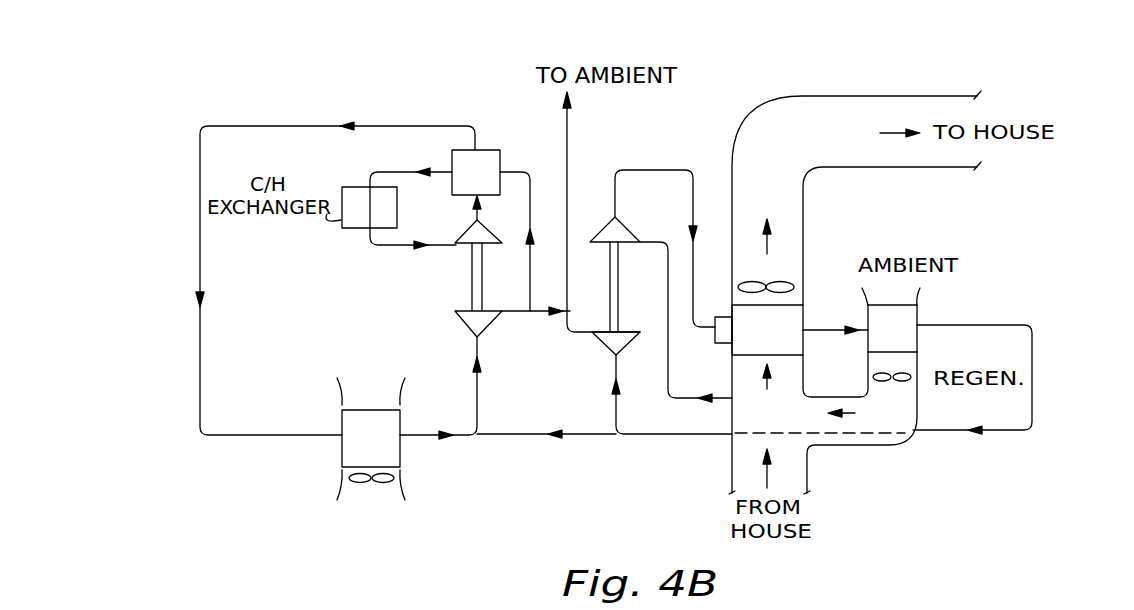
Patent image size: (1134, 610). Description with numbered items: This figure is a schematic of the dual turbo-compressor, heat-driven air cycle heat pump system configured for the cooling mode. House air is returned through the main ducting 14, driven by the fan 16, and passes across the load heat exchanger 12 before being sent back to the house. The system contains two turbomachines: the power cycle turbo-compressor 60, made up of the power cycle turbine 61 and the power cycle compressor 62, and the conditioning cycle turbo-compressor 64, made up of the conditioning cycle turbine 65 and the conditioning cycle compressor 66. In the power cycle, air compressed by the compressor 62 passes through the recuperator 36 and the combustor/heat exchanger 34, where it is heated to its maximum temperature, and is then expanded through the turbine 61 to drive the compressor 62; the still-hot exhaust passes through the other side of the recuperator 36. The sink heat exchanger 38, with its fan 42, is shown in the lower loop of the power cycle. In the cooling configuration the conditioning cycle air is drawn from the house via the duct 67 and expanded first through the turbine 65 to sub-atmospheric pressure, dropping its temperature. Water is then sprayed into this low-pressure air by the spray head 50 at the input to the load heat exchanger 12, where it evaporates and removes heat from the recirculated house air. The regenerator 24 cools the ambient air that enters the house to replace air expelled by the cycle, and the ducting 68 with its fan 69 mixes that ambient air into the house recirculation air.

The load heat exchanger 12 is at (803, 317).
The ducting 14 is at (803, 211).
The fan 16 is at (786, 282).
The regenerator 24 is at (919, 317).
The combustor/heat exchanger 34 is at (397, 211).
The recuperator 36 is at (499, 151).
The sink heat exchanger 38 is at (403, 419).
The fan 42 is at (380, 486).
The spray head 50 is at (722, 316).
The turbo-compressor 60 is at (464, 278).
The power cycle turbine 61 is at (487, 233).
The power cycle compressor 62 is at (486, 329).
The turbo-compressor 64 is at (628, 293).
The conditioning cycle turbine 65 is at (630, 229).
The conditioning cycle compressor 66 is at (601, 347).
The duct 67 is at (686, 397).
The ducting 68 is at (897, 447).
The fan 69 is at (874, 377).